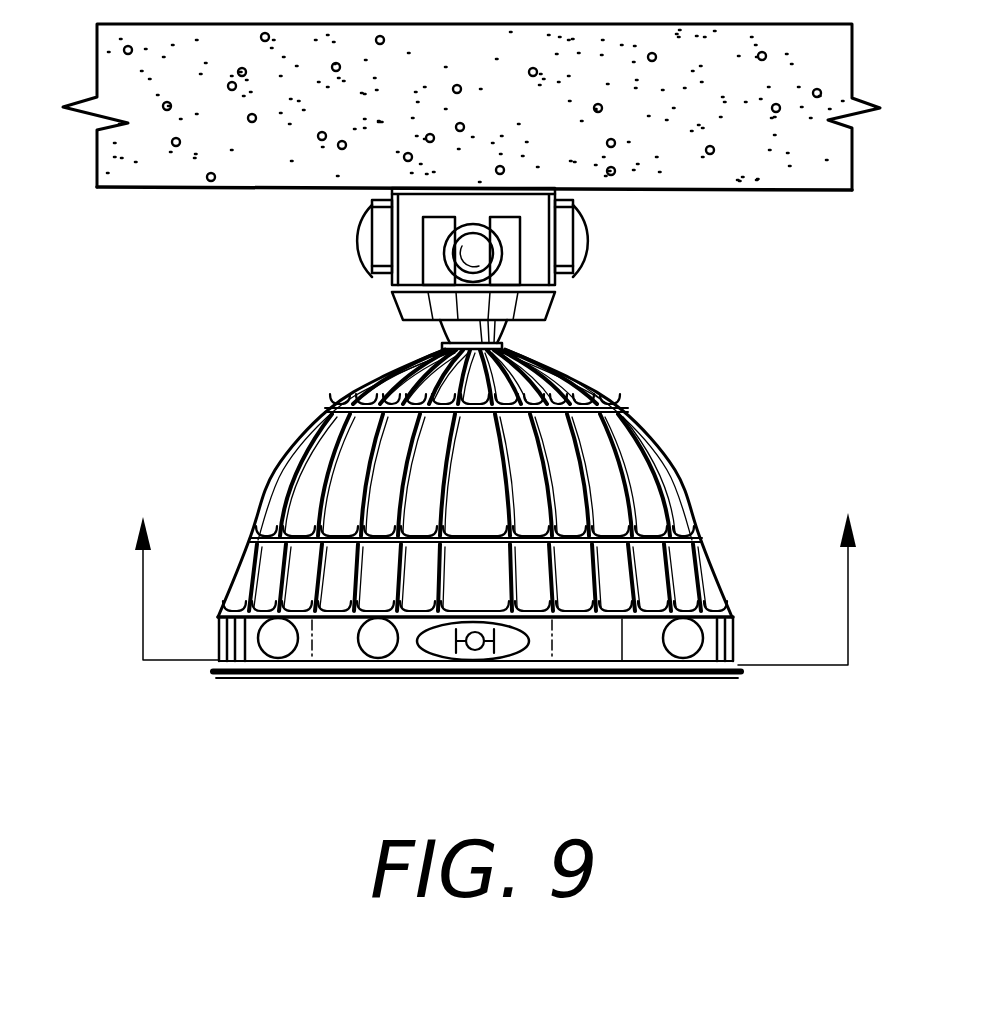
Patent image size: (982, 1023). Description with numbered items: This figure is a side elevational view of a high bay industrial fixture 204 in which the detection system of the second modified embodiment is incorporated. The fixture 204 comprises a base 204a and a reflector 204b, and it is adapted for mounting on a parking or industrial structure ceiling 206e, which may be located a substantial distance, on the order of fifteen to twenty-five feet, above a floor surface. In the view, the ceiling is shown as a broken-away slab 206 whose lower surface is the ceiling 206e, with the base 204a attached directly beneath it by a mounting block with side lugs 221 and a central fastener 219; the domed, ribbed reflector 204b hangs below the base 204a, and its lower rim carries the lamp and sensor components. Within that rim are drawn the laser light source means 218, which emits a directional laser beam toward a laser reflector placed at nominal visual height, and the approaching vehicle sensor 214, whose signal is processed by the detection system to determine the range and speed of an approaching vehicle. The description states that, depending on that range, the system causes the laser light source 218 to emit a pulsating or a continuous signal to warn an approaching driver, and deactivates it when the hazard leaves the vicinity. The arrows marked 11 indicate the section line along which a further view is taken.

The ceiling / mounting surface 206 is at (93, 192).
The ceiling 206e is at (800, 193).
The high bay industrial fixture 204 is at (745, 678).
The base 204a is at (545, 320).
The reflector 204b is at (210, 678).
The fastener 219 is at (474, 224).
The mounting lugs 221 is at (378, 280).
The laser light source means 218 is at (425, 654).
The approaching vehicle sensor 214 is at (533, 647).
The section line 11- 11 is at (499, 589).